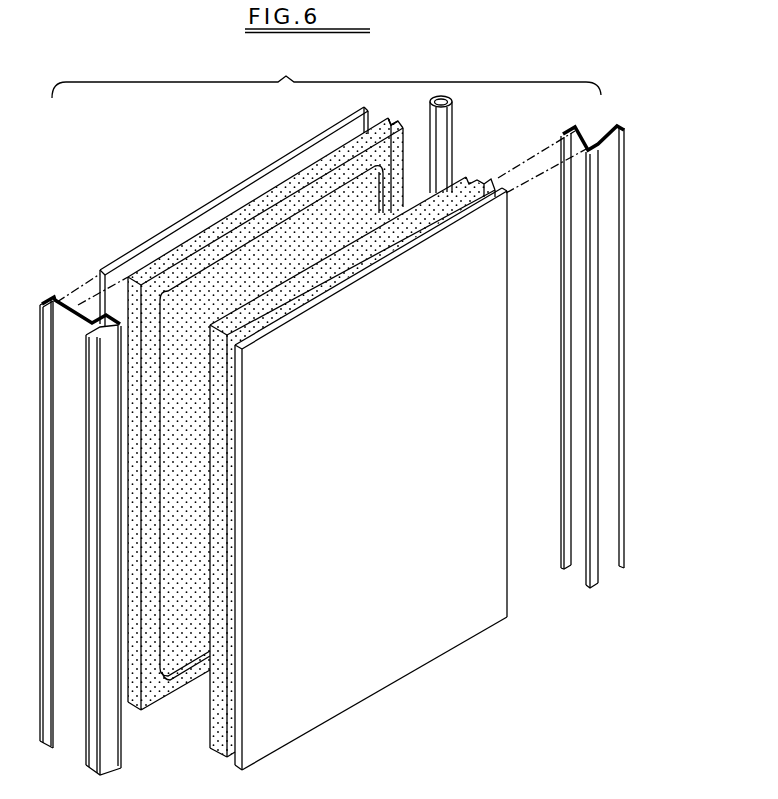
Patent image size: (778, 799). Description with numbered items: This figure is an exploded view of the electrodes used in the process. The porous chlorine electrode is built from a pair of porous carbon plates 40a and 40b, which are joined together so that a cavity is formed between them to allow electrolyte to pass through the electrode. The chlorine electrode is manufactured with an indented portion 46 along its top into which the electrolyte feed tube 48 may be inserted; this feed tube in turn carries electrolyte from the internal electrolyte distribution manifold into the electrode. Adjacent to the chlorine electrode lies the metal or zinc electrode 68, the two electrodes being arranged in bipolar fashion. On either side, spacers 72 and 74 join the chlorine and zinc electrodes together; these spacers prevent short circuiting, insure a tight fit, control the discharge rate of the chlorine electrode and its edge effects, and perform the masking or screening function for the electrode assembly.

The zinc electrode 68 is at (143, 243).
The porous carbon plate 40a is at (210, 230).
The porous carbon plate 40b is at (271, 302).
The indented portion 46 is at (404, 94).
The electrolyte feed tube 48 is at (442, 147).
The spacer 72 is at (72, 750).
The spacer 74 is at (610, 215).